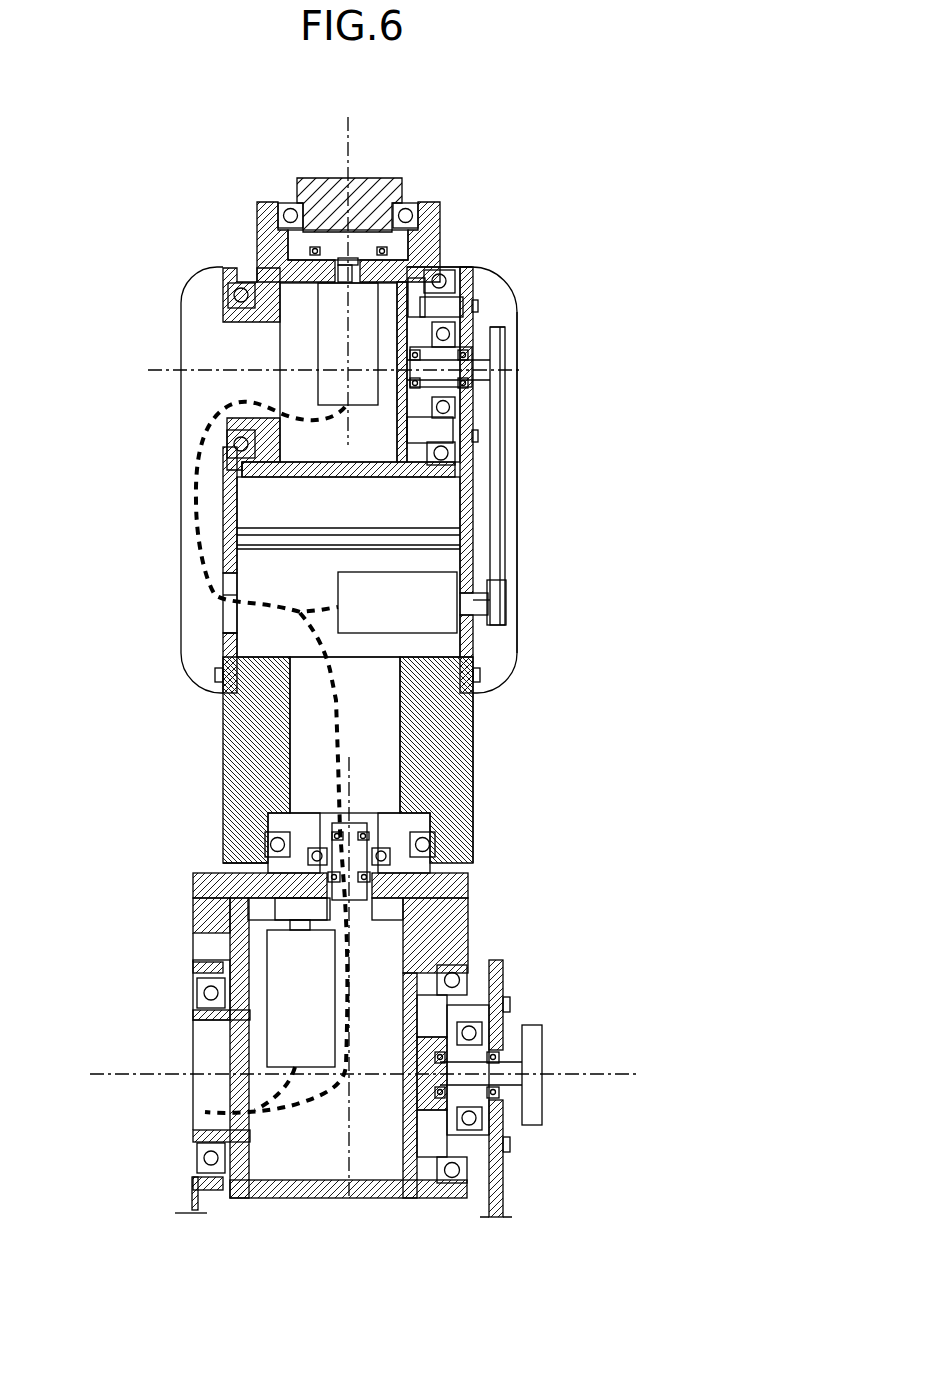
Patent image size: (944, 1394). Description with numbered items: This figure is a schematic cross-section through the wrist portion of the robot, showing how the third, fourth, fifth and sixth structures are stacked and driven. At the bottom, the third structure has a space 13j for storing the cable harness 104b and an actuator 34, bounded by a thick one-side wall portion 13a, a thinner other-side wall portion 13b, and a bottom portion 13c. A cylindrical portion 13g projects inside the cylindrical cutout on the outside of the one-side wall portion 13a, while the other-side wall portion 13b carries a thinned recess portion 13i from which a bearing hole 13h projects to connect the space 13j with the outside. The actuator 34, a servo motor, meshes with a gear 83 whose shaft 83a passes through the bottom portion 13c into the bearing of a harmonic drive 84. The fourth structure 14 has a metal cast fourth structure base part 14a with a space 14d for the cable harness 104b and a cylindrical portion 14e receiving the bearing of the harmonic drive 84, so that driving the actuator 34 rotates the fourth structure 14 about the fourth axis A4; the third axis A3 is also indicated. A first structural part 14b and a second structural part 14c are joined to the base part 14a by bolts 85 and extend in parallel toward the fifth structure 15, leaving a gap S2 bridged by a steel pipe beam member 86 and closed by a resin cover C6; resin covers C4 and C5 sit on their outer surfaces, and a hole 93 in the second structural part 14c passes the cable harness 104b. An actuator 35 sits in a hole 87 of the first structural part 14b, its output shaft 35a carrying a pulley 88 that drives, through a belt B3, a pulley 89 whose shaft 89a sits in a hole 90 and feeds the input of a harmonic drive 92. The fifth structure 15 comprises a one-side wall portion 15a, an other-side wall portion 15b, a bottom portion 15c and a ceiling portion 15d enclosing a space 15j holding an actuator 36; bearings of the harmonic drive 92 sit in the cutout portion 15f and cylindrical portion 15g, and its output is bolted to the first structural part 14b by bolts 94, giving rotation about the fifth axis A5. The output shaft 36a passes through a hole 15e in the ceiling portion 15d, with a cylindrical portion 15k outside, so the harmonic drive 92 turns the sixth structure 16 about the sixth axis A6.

The one-side wall portion 13a is at (455, 908).
The other-side wall portion 13b is at (204, 918).
The bottom portion 13c is at (268, 908).
The cylindrical portion 13g is at (403, 1127).
The bearing hole 13h is at (197, 1110).
The recess portion 13i is at (205, 967).
The space 13j is at (298, 1152).
The fourth structure 14 is at (614, 722).
The fourth structure base part 14a is at (462, 738).
The first structural part 14b is at (478, 680).
The second structural part 14c is at (223, 640).
The space 14d is at (390, 704).
The cylindrical portion 14e is at (262, 862).
The fifth structure 15 is at (240, 250).
The one-side wall portion 15a is at (450, 283).
The other-side wall portion 15b is at (280, 466).
The bottom portion 15c is at (363, 478).
The ceiling portion 15d is at (402, 262).
The hole 15e is at (315, 247).
The cutout portion 15f is at (468, 462).
The cylindrical portion 15g is at (470, 445).
The space 15j is at (312, 362).
The cylindrical portion 15k is at (432, 237).
The sixth structure 16 is at (392, 182).
The actuator 34 is at (275, 1045).
The actuator 35 is at (340, 583).
The output shaft 35a is at (482, 597).
The actuator 36 is at (318, 388).
The output shaft 36a is at (352, 262).
The gear 83 is at (397, 913).
The shaft 83a is at (440, 872).
The harmonic drive 84 is at (435, 818).
The bolts 85 is at (215, 676).
The beam member 86 is at (410, 546).
The hole 87 is at (488, 612).
The pulley 88 is at (506, 613).
The pulley 89 is at (505, 357).
The shaft 89a is at (493, 330).
The hole 90 is at (472, 382).
The harmonic drive 92 is at (297, 232).
The hole 93 is at (223, 602).
The bolts 94 is at (452, 307).
The cable harness 104b is at (195, 503).
The third axis A3 is at (344, 1076).
The fourth axis A4 is at (350, 963).
The fifth axis A5 is at (314, 373).
The sixth axis A6 is at (350, 267).
The belt B3 is at (518, 510).
The resin cover C4 is at (518, 437).
The resin cover C5 is at (181, 465).
The resin cover C6 is at (372, 528).
The gap S2 is at (288, 644).